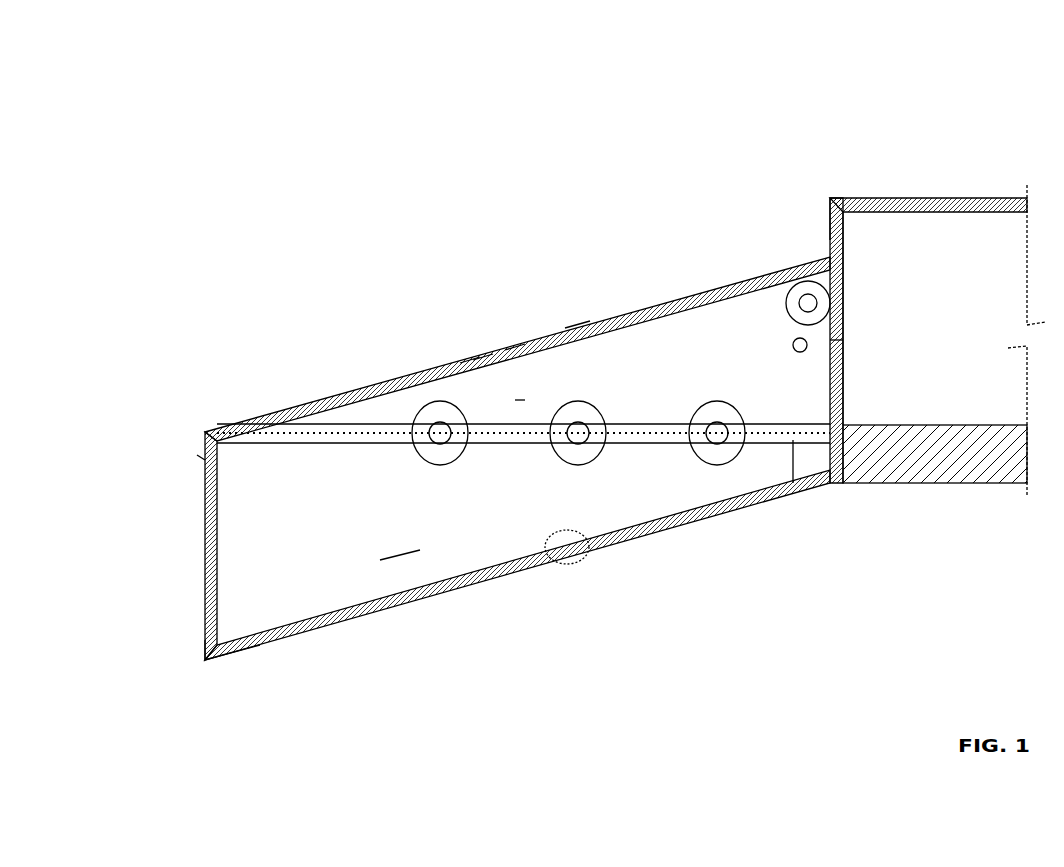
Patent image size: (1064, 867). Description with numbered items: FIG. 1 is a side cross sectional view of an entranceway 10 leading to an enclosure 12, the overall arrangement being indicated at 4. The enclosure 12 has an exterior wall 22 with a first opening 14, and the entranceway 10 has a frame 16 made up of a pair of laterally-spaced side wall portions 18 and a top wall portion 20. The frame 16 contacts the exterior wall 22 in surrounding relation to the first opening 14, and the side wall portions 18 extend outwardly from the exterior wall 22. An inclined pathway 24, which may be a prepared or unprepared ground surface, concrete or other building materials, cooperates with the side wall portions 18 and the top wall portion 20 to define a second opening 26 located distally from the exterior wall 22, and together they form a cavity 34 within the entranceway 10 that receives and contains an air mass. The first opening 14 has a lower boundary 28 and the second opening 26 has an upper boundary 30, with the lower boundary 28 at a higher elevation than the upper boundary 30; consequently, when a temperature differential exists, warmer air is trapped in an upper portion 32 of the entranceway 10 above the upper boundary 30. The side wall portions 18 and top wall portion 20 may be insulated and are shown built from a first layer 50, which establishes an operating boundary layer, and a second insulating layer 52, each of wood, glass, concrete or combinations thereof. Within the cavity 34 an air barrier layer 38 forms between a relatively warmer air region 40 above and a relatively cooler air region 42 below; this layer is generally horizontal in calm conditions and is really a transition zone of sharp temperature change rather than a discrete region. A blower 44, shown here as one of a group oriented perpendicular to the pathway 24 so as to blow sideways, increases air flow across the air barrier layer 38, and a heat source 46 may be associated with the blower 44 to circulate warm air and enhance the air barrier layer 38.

The wall assembly 4 is at (197, 458).
The entranceway 10 is at (398, 540).
The enclosure 12 is at (968, 144).
The first opening 14 is at (857, 313).
The frame 16 is at (693, 262).
The side wall portions 18 is at (470, 230).
The top wall portion 20 is at (577, 322).
The exterior wall 22 is at (827, 235).
The inclined pathway 24 is at (595, 552).
The second opening 26 is at (523, 391).
The lower boundary 28 is at (847, 410).
The upper boundary 30 is at (793, 483).
The upper portion 32 is at (848, 352).
The cavity 34 is at (520, 407).
The air barrier layer 38 is at (183, 585).
The relatively warmer air region 40 is at (190, 470).
The relatively cooler air region 42 is at (360, 503).
The blower 44 is at (447, 402).
The heat source 46 is at (212, 461).
The first layer 50 is at (481, 352).
The second insulating layer 52 is at (514, 342).